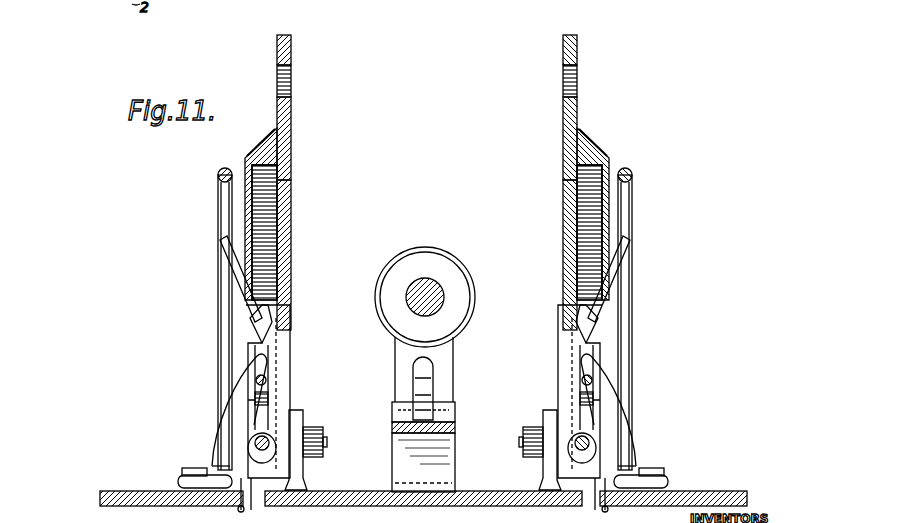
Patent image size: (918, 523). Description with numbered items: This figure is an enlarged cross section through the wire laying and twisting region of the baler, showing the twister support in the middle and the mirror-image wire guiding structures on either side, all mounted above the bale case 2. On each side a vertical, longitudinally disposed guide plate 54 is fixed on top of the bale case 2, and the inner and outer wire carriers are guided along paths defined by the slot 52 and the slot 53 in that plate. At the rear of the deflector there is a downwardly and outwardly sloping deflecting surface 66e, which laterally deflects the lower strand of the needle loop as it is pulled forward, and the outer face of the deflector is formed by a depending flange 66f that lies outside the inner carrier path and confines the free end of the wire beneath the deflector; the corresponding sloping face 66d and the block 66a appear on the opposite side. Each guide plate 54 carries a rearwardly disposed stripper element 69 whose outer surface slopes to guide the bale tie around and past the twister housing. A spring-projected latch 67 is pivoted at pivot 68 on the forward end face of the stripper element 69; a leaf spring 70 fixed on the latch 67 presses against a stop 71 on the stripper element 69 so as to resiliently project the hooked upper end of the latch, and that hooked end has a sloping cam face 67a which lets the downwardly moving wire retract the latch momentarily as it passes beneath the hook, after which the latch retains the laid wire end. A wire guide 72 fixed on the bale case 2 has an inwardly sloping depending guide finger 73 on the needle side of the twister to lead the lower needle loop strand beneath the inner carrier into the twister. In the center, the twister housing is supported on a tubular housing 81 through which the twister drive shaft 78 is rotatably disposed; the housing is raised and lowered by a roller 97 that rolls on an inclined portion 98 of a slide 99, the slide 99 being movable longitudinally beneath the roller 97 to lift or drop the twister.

The bale case 2 is at (143, 506).
The slot 52 is at (292, 210).
The slot 53 is at (292, 98).
The guide plate 54 is at (292, 149).
The clamp block 66a is at (258, 153).
The inclined face 66d is at (592, 148).
The deflecting surface 66e is at (268, 136).
The depending flange 66f is at (262, 204).
The latch 67 is at (284, 346).
The cam face 67a is at (274, 320).
The pivot 68 is at (268, 447).
The stripper element 69 is at (216, 435).
The leaf spring 70 is at (268, 399).
The stop 71 is at (266, 381).
The wire guide 72 is at (220, 300).
The guide finger 73 is at (230, 266).
The twister drive shaft 78 is at (432, 284).
The tubular housing 81 is at (418, 248).
The roller 97 is at (426, 384).
The inclined portion 98 is at (455, 428).
The slide 99 is at (423, 462).